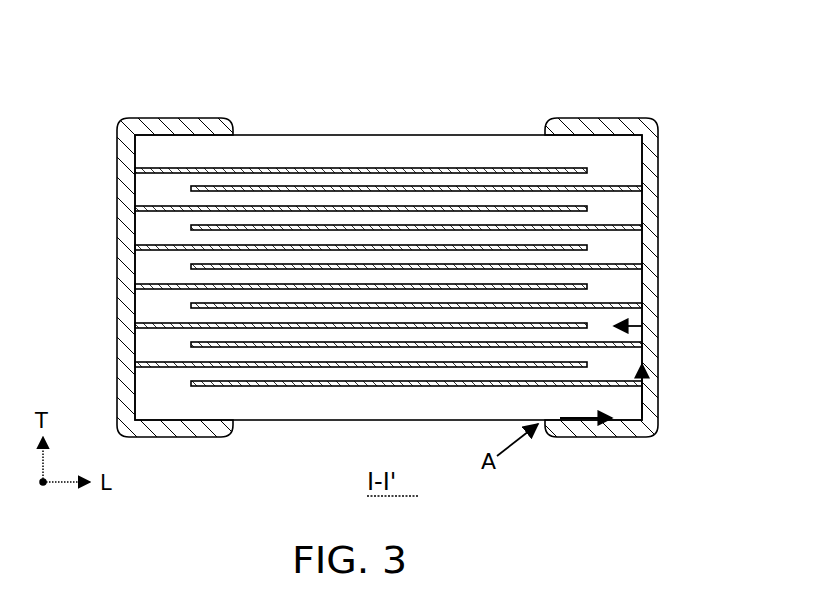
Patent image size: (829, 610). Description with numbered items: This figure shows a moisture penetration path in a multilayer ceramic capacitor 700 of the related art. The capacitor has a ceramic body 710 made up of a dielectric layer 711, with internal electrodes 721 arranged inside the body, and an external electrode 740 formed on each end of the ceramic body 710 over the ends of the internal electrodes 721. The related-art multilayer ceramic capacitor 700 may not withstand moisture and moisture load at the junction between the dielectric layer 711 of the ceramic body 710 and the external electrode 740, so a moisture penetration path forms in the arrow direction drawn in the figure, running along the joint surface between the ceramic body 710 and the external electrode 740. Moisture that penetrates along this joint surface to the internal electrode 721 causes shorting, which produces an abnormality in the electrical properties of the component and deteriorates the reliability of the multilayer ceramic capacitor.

The multilayer ceramic capacitor 700 is at (227, 43).
The ceramic body 710 is at (275, 134).
The dielectric layer 711 is at (347, 157).
The internal electrode 721 is at (425, 163).
The external electrode 740 is at (655, 273).